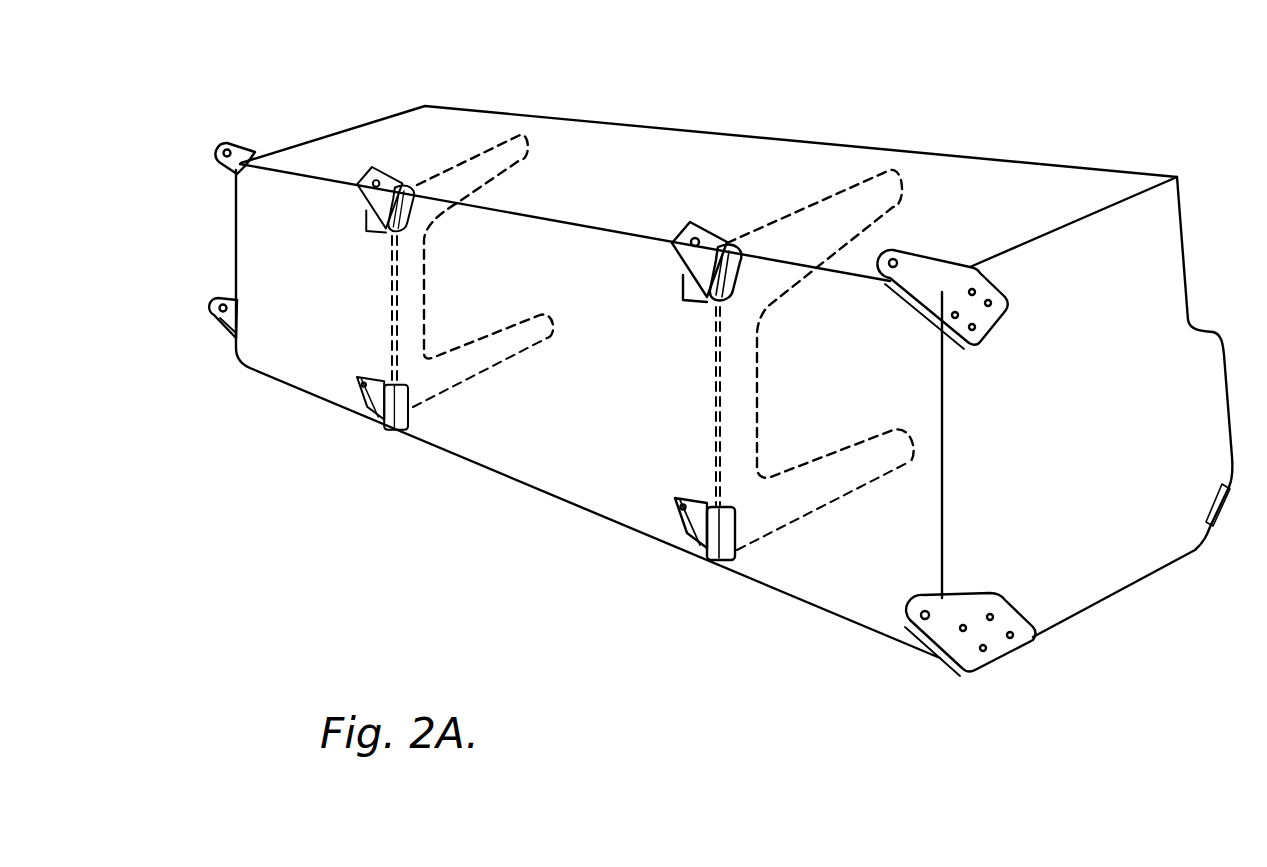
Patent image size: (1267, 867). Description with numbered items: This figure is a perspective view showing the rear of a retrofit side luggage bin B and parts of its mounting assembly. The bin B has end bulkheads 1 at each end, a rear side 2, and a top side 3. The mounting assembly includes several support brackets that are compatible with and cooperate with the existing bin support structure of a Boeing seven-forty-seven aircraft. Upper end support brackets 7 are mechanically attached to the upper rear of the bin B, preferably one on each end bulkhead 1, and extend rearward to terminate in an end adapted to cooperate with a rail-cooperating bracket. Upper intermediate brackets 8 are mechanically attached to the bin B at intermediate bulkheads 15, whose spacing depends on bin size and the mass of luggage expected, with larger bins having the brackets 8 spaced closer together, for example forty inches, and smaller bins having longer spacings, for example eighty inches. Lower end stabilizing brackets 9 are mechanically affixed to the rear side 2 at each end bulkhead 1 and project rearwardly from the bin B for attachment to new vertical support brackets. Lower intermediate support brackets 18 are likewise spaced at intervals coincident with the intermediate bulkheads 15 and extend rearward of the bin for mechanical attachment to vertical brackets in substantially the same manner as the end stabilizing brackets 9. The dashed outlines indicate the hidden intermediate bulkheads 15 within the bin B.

The retrofit side luggage bin B is at (1188, 137).
The end bulkhead 1 is at (1083, 428).
The rear side 2 is at (551, 369).
The top side 3 is at (604, 186).
The upper end support bracket 7 is at (236, 143).
The upper intermediate bracket 8 is at (395, 180).
The lower end stabilizing bracket 9 is at (222, 326).
The intermediate bulkhead 15 is at (480, 372).
The lower intermediate support bracket 18 is at (378, 418).